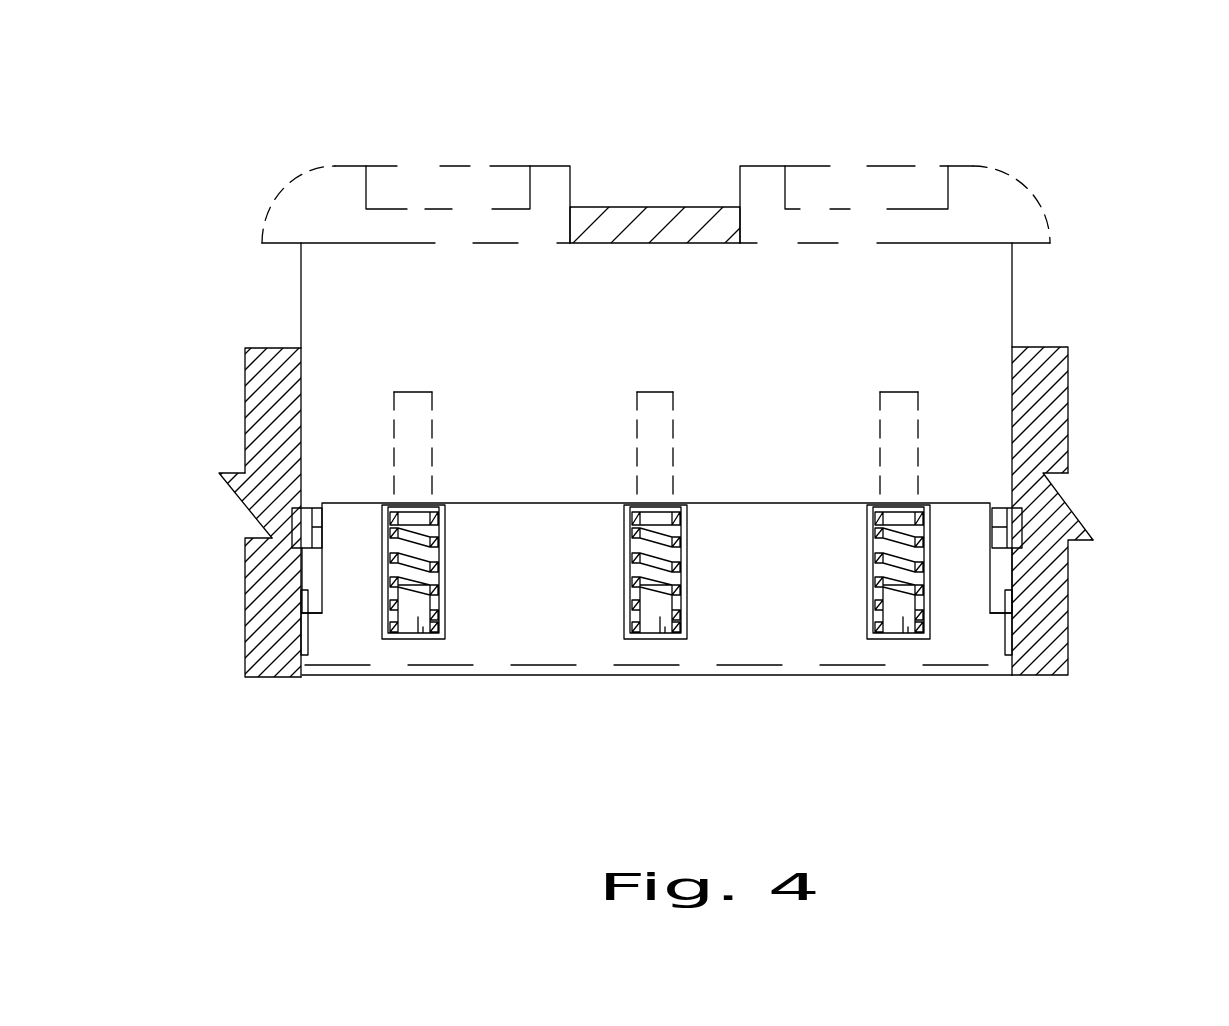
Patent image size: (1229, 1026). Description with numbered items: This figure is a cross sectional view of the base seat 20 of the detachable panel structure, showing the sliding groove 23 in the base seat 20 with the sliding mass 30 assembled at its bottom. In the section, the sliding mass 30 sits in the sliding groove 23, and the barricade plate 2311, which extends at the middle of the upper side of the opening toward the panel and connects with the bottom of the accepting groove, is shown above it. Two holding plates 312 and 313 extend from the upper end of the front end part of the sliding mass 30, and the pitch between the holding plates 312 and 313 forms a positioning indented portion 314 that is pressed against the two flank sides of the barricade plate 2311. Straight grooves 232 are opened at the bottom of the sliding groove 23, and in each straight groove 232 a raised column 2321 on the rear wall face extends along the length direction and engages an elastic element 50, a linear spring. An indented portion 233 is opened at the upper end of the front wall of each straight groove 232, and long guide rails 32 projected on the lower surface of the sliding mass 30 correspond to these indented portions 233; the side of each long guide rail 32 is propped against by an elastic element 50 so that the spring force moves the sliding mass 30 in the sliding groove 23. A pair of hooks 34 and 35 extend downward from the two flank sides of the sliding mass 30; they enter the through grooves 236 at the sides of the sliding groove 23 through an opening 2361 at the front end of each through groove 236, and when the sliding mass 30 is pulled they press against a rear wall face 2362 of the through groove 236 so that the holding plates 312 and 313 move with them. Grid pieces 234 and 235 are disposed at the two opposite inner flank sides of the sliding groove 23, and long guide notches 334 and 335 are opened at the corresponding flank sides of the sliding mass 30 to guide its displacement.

The base seat 20 is at (1068, 405).
The sliding groove 23 is at (810, 590).
The sliding mass 30 is at (943, 315).
The long guide rail 32 is at (895, 438).
The hook 34 is at (225, 503).
The hook 35 is at (1053, 490).
The elastic element 50 is at (868, 643).
The straight groove 232 is at (913, 575).
The indented portion 233 is at (920, 512).
The grid piece 234 is at (247, 655).
The grid piece 235 is at (1013, 644).
The through groove 236 is at (267, 537).
The holding plate 312 is at (547, 195).
The holding plate 313 is at (772, 190).
The positioning indented portion 314 is at (635, 243).
The long guide notch 334 is at (317, 616).
The long guide notch 335 is at (1015, 614).
The barricade plate 2311 is at (645, 230).
The raised column 2321 is at (653, 612).
The opening 2361 is at (313, 500).
The rear wall face 2362 is at (307, 614).